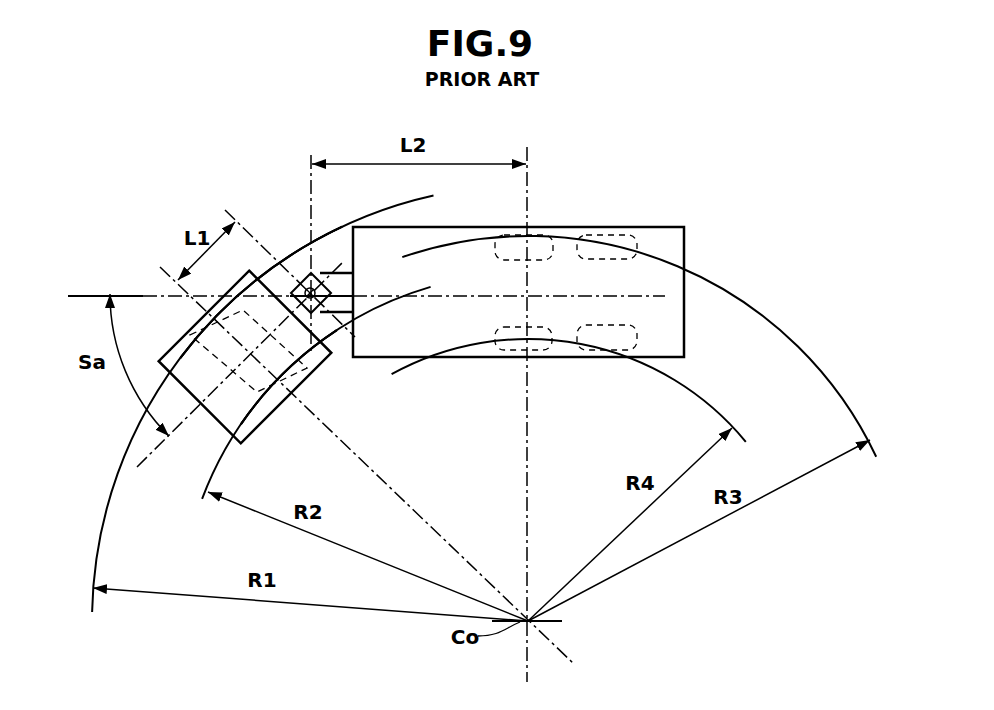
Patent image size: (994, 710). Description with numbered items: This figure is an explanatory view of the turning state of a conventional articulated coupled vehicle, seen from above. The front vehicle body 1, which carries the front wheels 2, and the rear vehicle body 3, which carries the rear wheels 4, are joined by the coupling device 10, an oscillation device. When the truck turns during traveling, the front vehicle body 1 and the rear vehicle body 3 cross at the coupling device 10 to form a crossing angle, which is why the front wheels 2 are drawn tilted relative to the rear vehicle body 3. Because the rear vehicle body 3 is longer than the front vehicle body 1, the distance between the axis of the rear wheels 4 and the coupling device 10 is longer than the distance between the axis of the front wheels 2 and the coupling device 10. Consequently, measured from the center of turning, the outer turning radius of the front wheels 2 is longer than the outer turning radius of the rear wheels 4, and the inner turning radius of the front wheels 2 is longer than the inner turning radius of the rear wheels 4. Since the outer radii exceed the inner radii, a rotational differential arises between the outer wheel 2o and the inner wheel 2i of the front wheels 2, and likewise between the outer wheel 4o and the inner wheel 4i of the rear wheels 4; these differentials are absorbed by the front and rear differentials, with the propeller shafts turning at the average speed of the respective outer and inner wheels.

The front vehicle body 1 is at (165, 342).
The front wheels 2 is at (279, 402).
The outer wheel of the front wheels 2o is at (192, 322).
The inner wheel of the front wheels 2i is at (304, 381).
The coupling device 10 is at (306, 287).
The rear vehicle body 3 is at (630, 227).
The rear wheels 4 is at (566, 297).
The outer wheel of the rear wheels 4o is at (540, 237).
The inner wheel of the rear wheels 4i is at (542, 352).